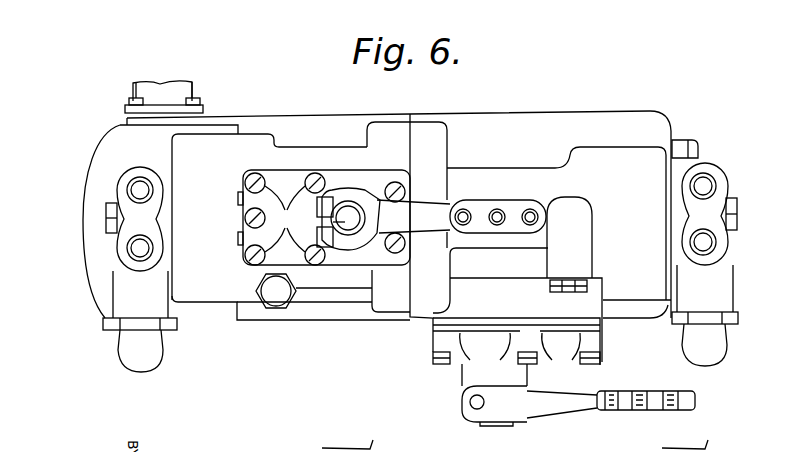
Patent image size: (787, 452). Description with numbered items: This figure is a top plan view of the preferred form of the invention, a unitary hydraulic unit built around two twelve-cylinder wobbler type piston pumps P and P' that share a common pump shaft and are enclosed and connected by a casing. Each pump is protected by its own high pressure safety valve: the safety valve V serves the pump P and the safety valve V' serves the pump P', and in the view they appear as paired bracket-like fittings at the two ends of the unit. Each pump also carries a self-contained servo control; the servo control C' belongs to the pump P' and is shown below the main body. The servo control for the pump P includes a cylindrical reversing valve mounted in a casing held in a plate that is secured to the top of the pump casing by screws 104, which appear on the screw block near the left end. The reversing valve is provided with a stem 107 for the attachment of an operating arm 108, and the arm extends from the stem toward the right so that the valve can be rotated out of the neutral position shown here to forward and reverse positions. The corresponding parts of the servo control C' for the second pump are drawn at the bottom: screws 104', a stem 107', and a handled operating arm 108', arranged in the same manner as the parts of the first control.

The wobbler type piston pump P is at (258, 203).
The wobbler type piston pump P' is at (532, 219).
The screws 104 is at (324, 217).
The stem 107 is at (383, 198).
The operating arm 108 is at (498, 189).
The high pressure safety valve V is at (158, 269).
The high pressure safety valve V' is at (724, 264).
The servo control C' is at (488, 354).
The lugs 104' is at (501, 372).
The lever hub 107' is at (529, 419).
The handle 108' is at (636, 421).